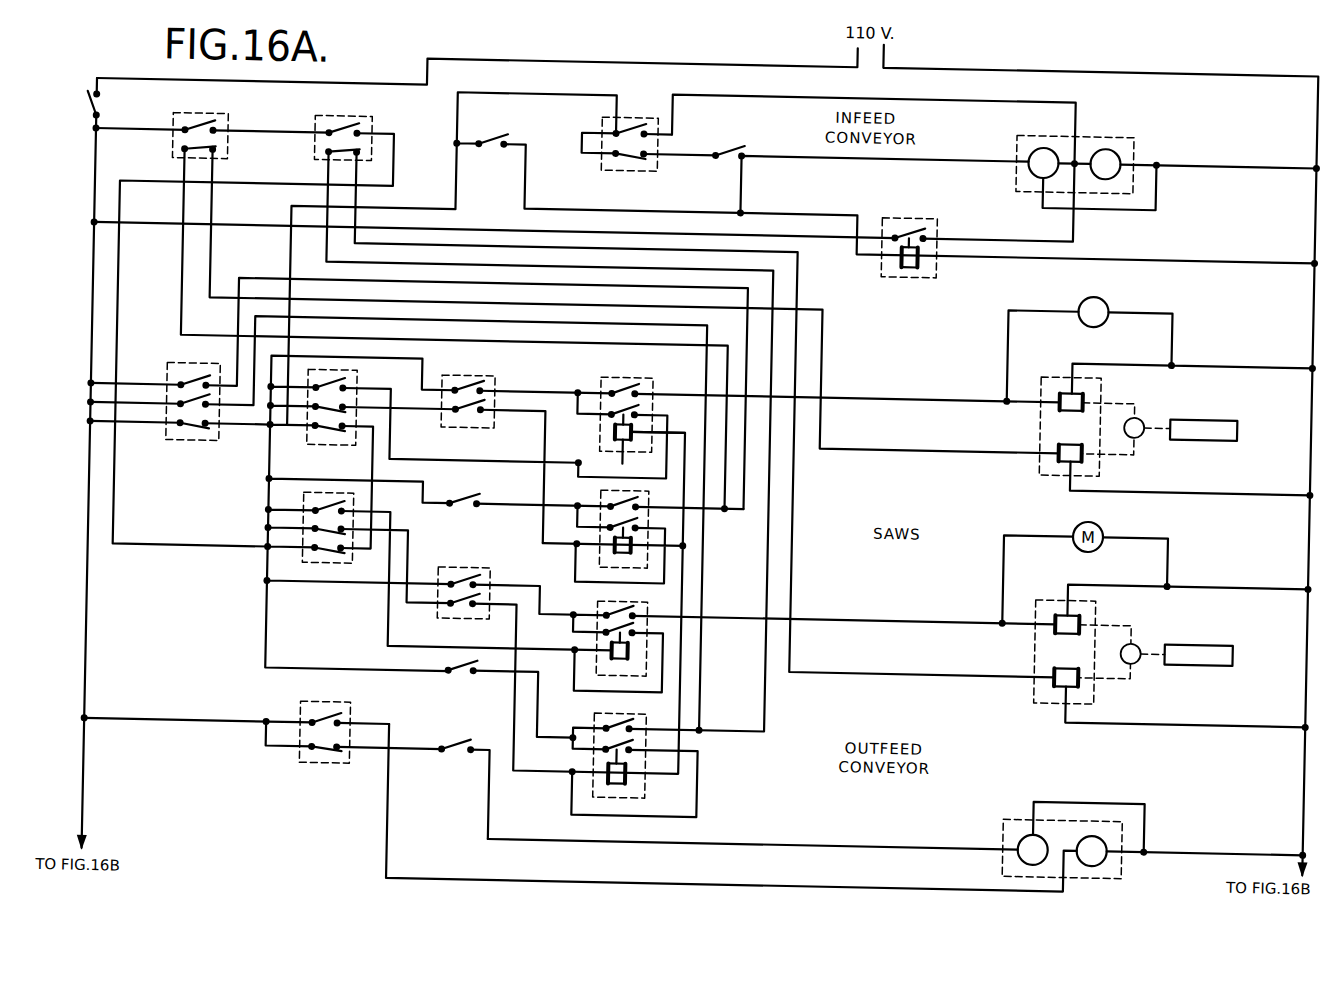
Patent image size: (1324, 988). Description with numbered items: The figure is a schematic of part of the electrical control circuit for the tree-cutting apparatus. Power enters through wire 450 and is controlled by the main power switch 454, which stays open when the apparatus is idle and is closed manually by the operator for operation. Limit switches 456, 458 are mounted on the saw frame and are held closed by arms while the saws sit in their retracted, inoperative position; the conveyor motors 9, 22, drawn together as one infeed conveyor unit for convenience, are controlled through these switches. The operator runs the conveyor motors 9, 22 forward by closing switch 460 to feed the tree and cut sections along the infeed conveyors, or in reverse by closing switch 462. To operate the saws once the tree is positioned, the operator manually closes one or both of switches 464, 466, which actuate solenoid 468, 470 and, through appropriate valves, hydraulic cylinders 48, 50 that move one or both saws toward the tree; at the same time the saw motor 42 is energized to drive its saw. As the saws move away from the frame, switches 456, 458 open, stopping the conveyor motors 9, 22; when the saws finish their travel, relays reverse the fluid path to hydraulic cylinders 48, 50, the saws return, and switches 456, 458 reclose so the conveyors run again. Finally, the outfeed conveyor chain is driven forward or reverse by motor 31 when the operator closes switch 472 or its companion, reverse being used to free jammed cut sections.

The wire 450 is at (96, 168).
The main power switch 454 is at (92, 107).
The limit switch 456 is at (203, 103).
The limit switch 458 is at (340, 108).
The switch 460 is at (501, 126).
The switch 462 is at (650, 105).
The conveyor motor 9 is at (1167, 159).
The conveyor motor 22 is at (1107, 117).
The saw motor 42 is at (1086, 283).
The hydraulic cylinder 48 is at (1203, 398).
The solenoid 468 is at (1047, 409).
The hydraulic cylinder 50 is at (1209, 623).
The solenoid 470 is at (1046, 632).
The motor 31 is at (1033, 801).
The switch 464 is at (337, 441).
The switch 466 is at (345, 558).
The switch 472 is at (341, 759).